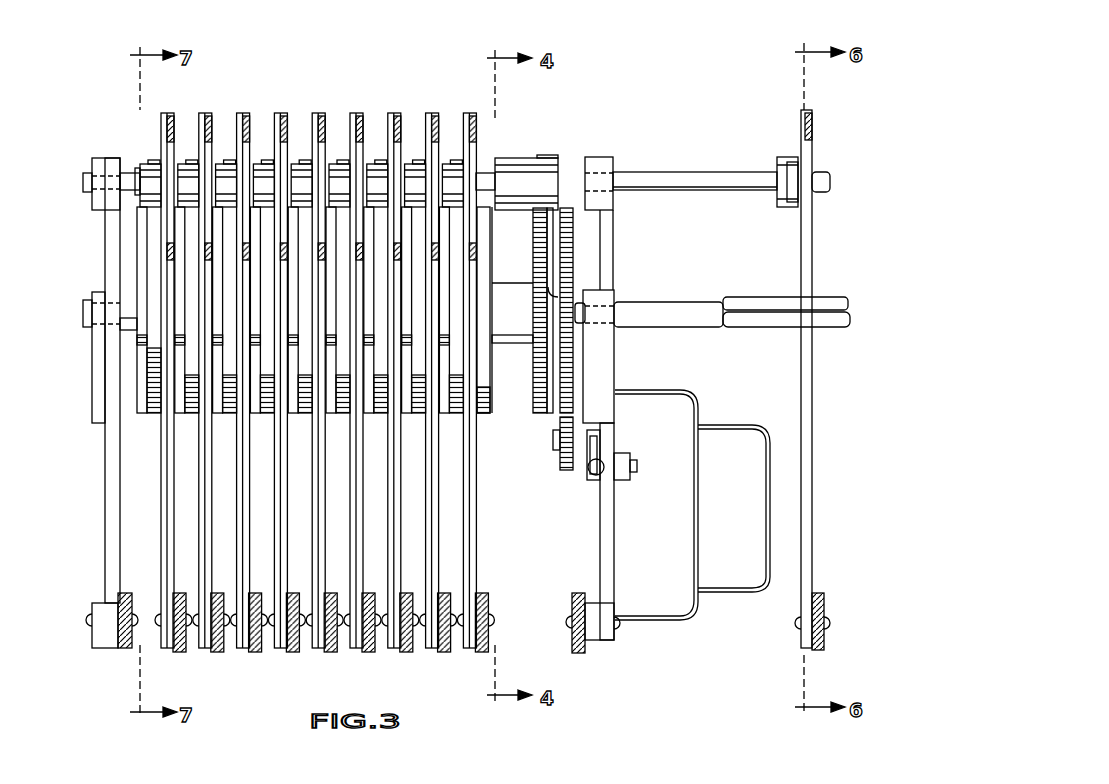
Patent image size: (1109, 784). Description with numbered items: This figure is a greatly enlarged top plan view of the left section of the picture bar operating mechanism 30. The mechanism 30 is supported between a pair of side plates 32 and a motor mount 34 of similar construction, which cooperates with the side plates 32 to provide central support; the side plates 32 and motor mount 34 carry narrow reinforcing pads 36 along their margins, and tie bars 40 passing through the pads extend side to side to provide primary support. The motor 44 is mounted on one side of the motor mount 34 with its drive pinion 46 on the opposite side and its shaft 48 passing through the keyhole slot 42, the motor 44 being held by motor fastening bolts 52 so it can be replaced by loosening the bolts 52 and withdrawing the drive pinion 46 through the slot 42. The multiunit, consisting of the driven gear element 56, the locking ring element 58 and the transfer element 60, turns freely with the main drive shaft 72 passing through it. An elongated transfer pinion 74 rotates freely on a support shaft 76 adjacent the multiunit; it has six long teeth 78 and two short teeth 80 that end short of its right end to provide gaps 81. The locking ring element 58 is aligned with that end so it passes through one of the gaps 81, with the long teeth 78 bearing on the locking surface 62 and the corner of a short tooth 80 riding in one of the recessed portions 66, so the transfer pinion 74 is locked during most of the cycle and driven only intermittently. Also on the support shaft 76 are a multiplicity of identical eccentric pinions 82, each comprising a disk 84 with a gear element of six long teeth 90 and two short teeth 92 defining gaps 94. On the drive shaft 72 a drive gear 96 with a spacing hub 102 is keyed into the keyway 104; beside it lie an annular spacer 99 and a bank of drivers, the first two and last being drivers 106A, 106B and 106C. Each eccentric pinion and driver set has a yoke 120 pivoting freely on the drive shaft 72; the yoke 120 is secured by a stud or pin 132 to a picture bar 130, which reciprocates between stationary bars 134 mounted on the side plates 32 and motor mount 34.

The picture bar operating mechanism 30 is at (488, 138).
The side plates 32 is at (105, 510).
The motor mount 34 is at (600, 537).
The reinforcing pads 36 is at (98, 403).
The tie bars 40 is at (120, 326).
The keyhole slot 42 is at (600, 507).
The motor 44 is at (718, 505).
The drive pinion 46 is at (560, 470).
The shaft 48 is at (556, 442).
The motor fastening bolts 52 is at (594, 468).
The driven gear element 56 is at (573, 245).
The locking ring element 58 is at (555, 278).
The transfer element 60 is at (548, 360).
The locking surface 62 is at (555, 223).
The recessed portions 66 is at (558, 297).
The main drive shaft 72 is at (835, 312).
The transfer pinion 74 is at (560, 160).
The support shaft 76 is at (674, 172).
The long teeth 78 is at (522, 200).
The short teeth 80 is at (537, 157).
The gaps 81 is at (557, 157).
The eccentric pinions 82 is at (265, 152).
The disk 84 is at (160, 115).
The long teeth 90 is at (306, 187).
The short teeth 92 is at (190, 160).
The gaps 94 is at (141, 163).
The drive gear 96 is at (538, 403).
The annular spacer 99 is at (486, 412).
The spacing hub 102 is at (512, 290).
The keyway 104 is at (745, 310).
The first driver 106A is at (152, 425).
The second driver 106B is at (191, 425).
The last driver 106C is at (456, 425).
The yoke 120 is at (167, 530).
The picture bars 130 is at (215, 653).
The stud or pin 132 is at (620, 628).
The stationary bars 134 is at (125, 650).